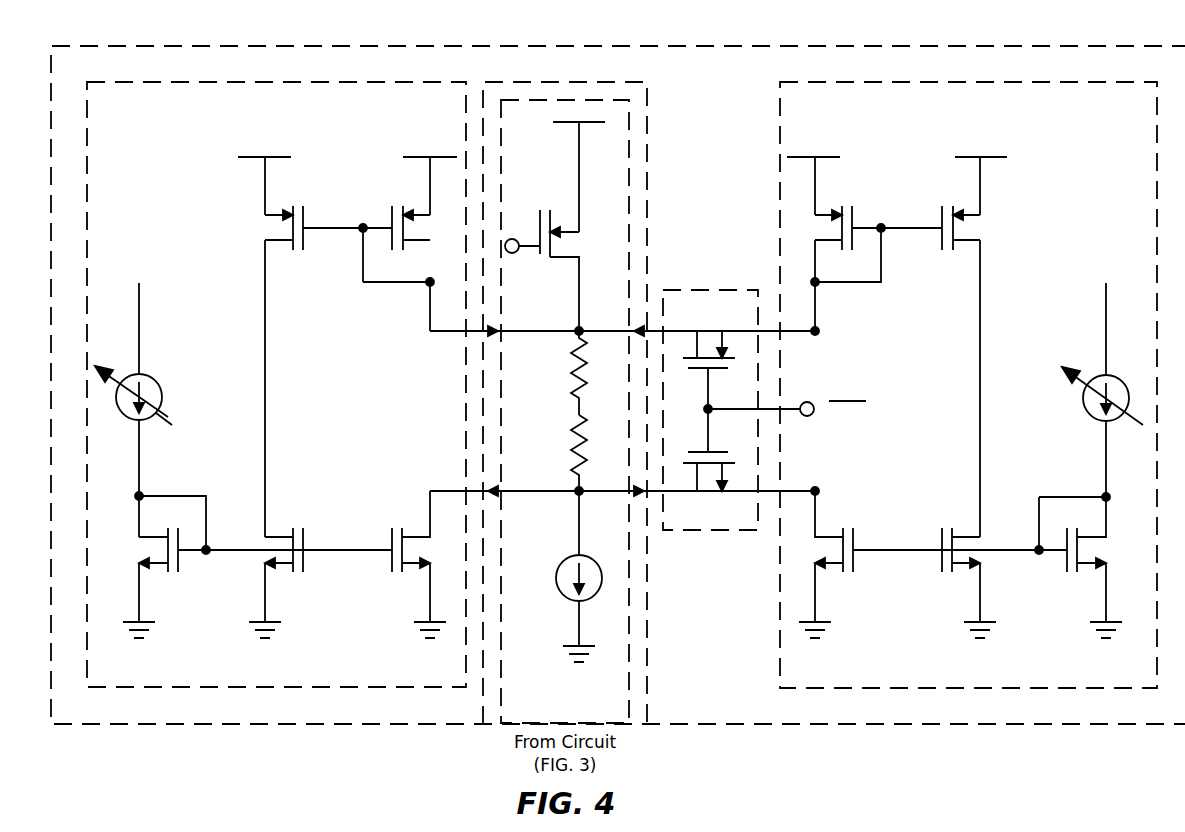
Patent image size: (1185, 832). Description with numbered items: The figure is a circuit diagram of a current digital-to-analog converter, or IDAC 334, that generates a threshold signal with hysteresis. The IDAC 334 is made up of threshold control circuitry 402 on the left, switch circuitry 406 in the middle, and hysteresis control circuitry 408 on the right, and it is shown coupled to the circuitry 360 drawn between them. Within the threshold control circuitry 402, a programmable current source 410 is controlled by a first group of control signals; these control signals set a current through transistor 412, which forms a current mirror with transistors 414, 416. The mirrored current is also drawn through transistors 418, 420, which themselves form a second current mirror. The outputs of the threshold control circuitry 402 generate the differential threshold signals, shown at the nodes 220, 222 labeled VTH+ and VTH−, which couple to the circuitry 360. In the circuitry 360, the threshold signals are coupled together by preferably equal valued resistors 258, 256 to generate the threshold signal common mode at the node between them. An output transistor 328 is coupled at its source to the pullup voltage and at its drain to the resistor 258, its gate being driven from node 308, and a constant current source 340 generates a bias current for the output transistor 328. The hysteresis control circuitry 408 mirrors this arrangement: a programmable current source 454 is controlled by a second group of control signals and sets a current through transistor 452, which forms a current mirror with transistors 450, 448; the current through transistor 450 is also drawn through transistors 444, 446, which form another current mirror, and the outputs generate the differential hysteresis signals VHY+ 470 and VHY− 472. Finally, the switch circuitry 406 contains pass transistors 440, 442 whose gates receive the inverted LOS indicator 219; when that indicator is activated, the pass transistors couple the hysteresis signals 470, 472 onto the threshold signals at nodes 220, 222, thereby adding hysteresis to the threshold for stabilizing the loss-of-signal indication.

The current digital-to-analog converter (IDAC) 334 is at (720, 46).
The threshold control circuitry 402 is at (150, 82).
The hysteresis control circuitry 408 is at (843, 82).
The circuitry 360 is at (629, 113).
The switch circuitry 406 is at (695, 290).
The transistor 418 is at (303, 242).
The transistor 420 is at (392, 213).
The programmable current source 410 is at (163, 386).
The transistor 412 is at (178, 565).
The transistor 414 is at (303, 565).
The transistor 416 is at (392, 537).
The differential input signal VIN+ 220 is at (581, 329).
The differential input signal VIN− 222 is at (581, 493).
The resistor 258 is at (571, 381).
The resistor 256 is at (571, 457).
The node 308 is at (517, 241).
The output transistor 328 is at (550, 258).
The constant current source 340 is at (557, 572).
The pass transistor 440 is at (723, 369).
The pass transistor 442 is at (723, 452).
The inverted LOS indicator 219 is at (812, 403).
The transistor 444 is at (853, 215).
The transistor 446 is at (942, 213).
The differential hysteresis signal VHY+ 470 is at (817, 329).
The differential hysteresis signal VHY− 472 is at (817, 489).
The transistor 448 is at (853, 565).
The transistor 450 is at (942, 537).
The transistor 452 is at (1067, 563).
The programmable current source 454 is at (1085, 408).